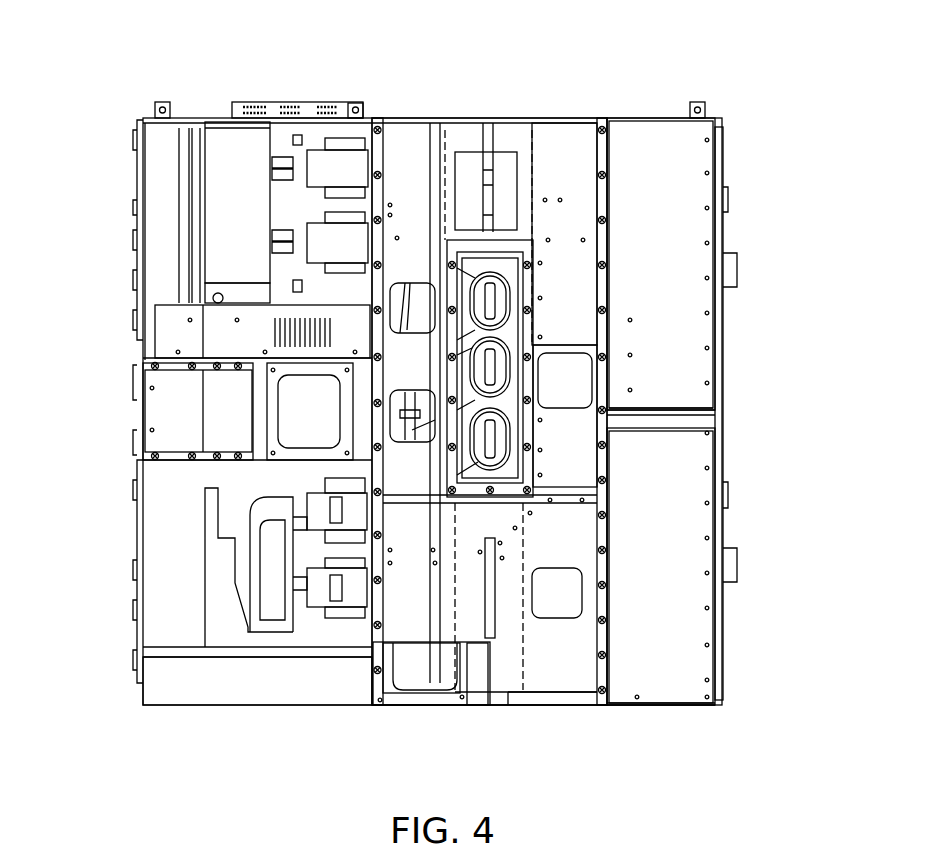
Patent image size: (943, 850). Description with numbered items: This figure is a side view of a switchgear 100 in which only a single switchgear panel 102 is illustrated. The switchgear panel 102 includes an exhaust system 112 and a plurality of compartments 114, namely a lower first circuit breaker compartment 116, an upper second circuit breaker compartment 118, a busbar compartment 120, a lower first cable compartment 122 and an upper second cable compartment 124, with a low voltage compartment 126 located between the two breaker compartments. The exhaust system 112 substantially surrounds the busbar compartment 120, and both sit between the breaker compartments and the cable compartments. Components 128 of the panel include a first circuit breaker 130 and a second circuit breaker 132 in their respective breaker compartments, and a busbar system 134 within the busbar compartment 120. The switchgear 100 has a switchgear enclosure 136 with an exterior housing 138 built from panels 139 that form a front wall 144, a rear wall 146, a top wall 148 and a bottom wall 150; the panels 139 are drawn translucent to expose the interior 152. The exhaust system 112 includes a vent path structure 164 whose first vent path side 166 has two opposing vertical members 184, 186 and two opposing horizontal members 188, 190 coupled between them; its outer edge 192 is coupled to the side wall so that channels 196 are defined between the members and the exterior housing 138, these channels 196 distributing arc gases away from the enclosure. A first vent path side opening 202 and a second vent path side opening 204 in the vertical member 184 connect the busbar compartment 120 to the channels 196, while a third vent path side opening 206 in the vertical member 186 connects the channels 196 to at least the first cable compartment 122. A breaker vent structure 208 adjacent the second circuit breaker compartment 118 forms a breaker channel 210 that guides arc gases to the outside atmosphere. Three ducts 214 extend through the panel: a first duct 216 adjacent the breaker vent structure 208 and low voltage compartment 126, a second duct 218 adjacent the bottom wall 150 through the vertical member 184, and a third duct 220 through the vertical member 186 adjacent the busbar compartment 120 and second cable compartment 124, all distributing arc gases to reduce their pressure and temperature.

The switchgear 100 is at (118, 45).
The switchgear panel 102 is at (750, 100).
The exhaust system 112 is at (432, 48).
The compartments 114 is at (675, 180).
The first circuit breaker compartment 116 is at (145, 530).
The second circuit breaker compartment 118 is at (162, 190).
The busbar compartment 120 is at (530, 323).
The first cable compartment 122 is at (700, 450).
The second cable compartment 124 is at (700, 405).
The low voltage compartment 126 is at (160, 412).
The components 128 is at (517, 262).
The first circuit breaker 130 is at (225, 600).
The second circuit breaker 132 is at (173, 175).
The busbar system 134 is at (517, 290).
The switchgear enclosure 136 is at (730, 183).
The exterior housing 138 is at (735, 238).
The panels 139 is at (700, 370).
The front wall 144 is at (145, 632).
The rear wall 146 is at (728, 540).
The top wall 148 is at (658, 115).
The bottom wall 150 is at (680, 705).
The interior 152 is at (290, 645).
The vent path structure 164 is at (495, 722).
The first vent path side 166 is at (383, 112).
The vertical member 184 is at (415, 120).
The vertical member 186 is at (562, 700).
The horizontal member 188 is at (515, 140).
The horizontal member 190 is at (510, 540).
The outer edge 192 is at (600, 665).
The channels 196 is at (577, 150).
The first vent path side opening 202 is at (420, 282).
The second vent path side opening 204 is at (410, 442).
The third vent path side opening 206 is at (375, 273).
The breaker vent structure 208 is at (250, 107).
The breaker channel 210 is at (228, 165).
The ducts 214 is at (270, 465).
The first duct 216 is at (297, 447).
The second duct 218 is at (405, 685).
The third duct 220 is at (610, 378).